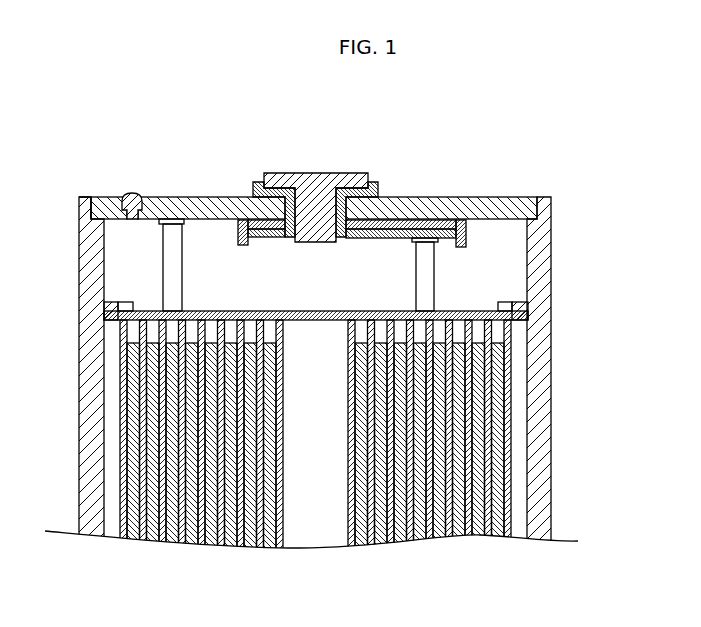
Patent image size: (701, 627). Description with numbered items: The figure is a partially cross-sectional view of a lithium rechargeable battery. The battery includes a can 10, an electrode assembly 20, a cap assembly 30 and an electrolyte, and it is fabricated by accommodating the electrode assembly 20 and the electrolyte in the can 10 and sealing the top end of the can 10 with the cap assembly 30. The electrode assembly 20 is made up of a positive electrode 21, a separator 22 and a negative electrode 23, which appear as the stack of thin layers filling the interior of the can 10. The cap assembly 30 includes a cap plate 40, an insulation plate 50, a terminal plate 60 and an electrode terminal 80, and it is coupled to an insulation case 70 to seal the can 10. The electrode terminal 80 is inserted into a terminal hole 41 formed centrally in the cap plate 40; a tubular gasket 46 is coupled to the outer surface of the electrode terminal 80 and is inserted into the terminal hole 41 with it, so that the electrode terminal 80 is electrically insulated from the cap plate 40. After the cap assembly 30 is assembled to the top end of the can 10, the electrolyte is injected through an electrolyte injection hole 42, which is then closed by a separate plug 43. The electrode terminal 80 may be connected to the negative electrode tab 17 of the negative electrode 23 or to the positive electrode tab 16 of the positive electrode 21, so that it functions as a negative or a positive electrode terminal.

The can 10 is at (545, 457).
The positive electrode tab 16 is at (170, 250).
The negative electrode tab 17 is at (432, 279).
The electrode assembly 20 is at (354, 452).
The positive electrode 21 is at (496, 534).
The separator 22 is at (508, 534).
The negative electrode 23 is at (476, 534).
The cap assembly 30 is at (428, 178).
The cap plate 40 is at (483, 197).
The terminal hole 41 is at (283, 212).
The electrolyte injection hole 42 is at (111, 212).
The plug 43 is at (134, 191).
The tubular gasket 46 is at (376, 182).
The insulation plate 50 is at (466, 233).
The terminal plate 60 is at (378, 236).
The insulation case 70 is at (143, 308).
The electrode terminal 80 is at (314, 178).